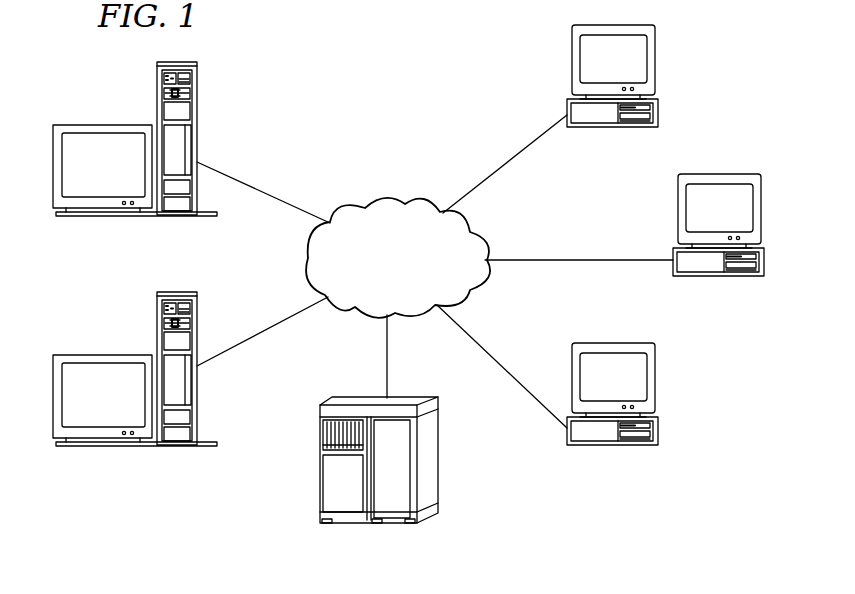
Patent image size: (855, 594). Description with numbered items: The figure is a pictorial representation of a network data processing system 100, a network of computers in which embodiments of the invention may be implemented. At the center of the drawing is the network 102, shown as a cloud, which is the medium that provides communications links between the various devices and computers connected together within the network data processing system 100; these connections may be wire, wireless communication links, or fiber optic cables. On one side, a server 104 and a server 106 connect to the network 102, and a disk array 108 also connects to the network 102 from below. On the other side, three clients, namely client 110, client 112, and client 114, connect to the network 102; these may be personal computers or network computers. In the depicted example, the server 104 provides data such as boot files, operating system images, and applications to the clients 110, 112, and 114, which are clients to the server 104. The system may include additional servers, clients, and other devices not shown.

The network data processing system 100 is at (299, 62).
The network 102 is at (378, 289).
The server 104 is at (157, 85).
The server 106 is at (157, 315).
The disk array 108 is at (438, 457).
The client 110 is at (655, 65).
The client 112 is at (760, 212).
The client 114 is at (653, 385).